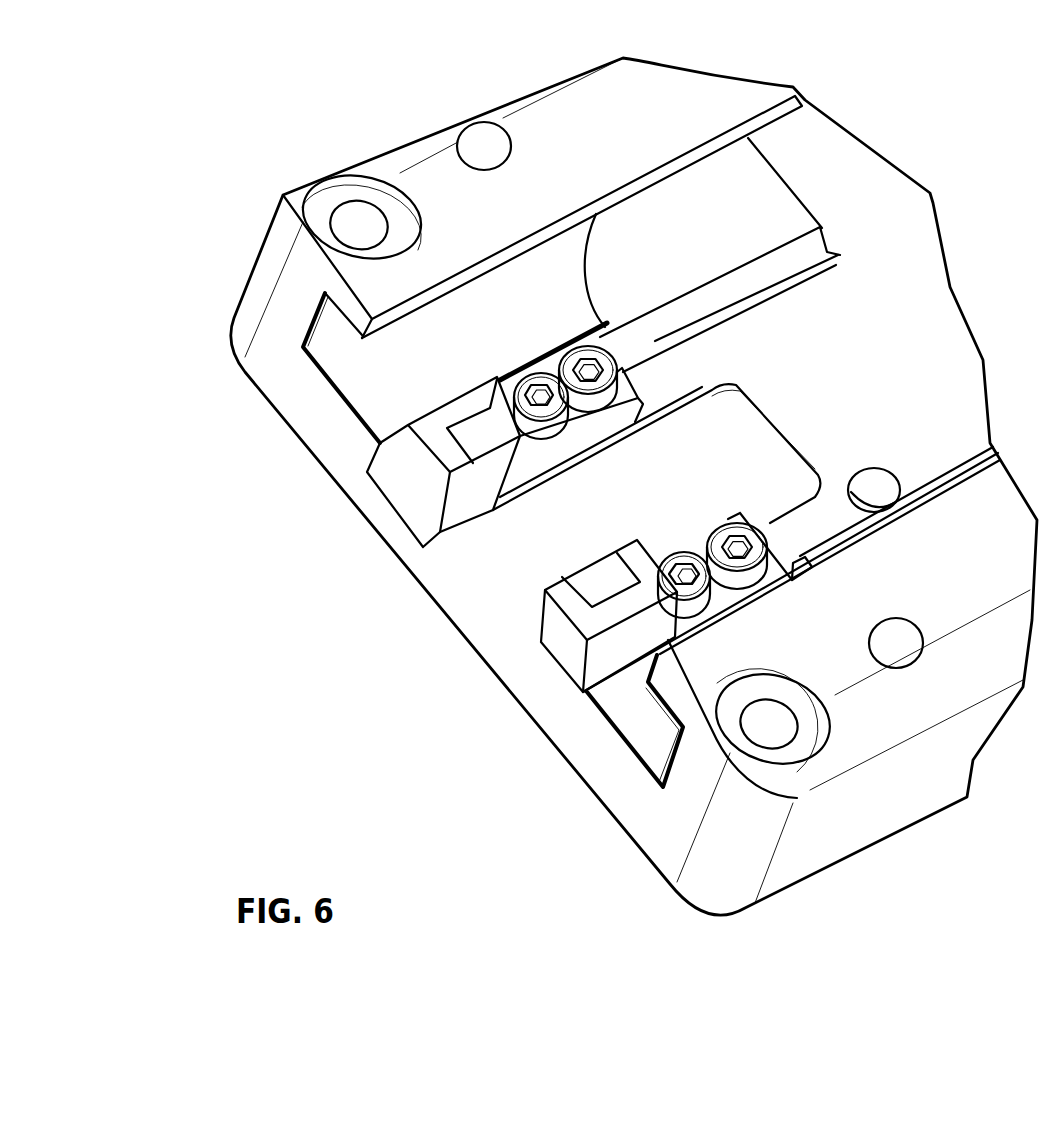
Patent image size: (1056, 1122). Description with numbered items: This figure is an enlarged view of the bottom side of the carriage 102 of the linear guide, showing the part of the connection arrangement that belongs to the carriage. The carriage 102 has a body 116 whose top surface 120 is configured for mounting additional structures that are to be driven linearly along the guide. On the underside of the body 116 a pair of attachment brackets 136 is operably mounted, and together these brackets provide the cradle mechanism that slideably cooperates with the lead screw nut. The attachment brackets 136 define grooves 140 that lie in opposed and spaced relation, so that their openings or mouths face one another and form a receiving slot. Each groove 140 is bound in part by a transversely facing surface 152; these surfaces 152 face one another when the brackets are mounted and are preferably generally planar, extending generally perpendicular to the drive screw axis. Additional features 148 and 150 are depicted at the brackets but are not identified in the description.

The carriage 102 is at (307, 450).
The body 116 is at (283, 392).
The top surface 120 is at (400, 557).
The attachment brackets 136 is at (403, 492).
The grooves 140 is at (458, 517).
The notch 148 is at (457, 427).
The screw 150 is at (494, 410).
The transversely facing surface 152 is at (470, 437).